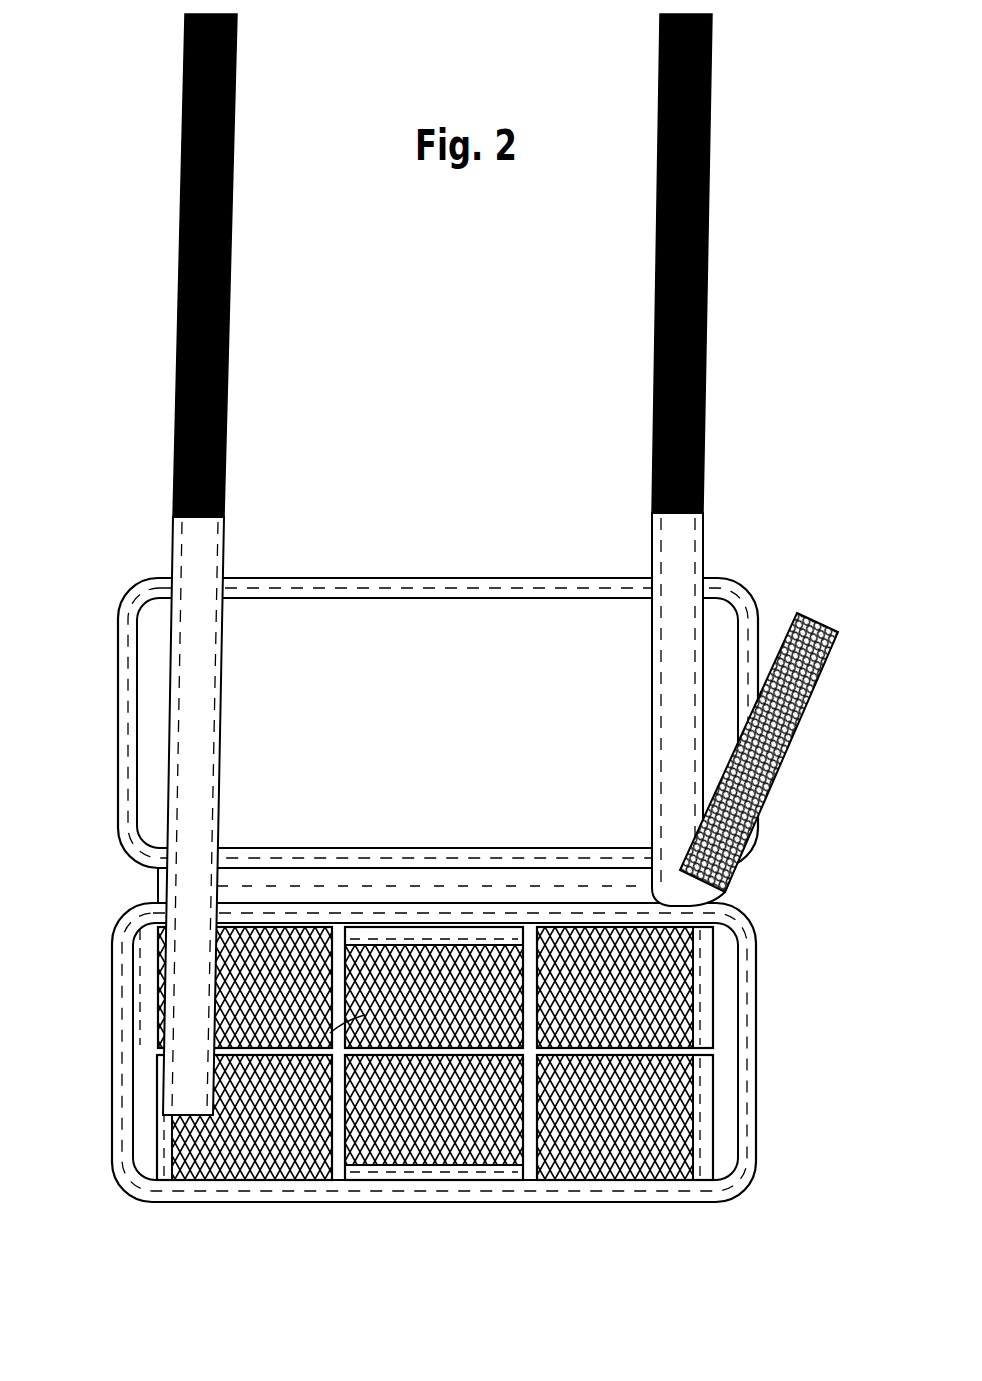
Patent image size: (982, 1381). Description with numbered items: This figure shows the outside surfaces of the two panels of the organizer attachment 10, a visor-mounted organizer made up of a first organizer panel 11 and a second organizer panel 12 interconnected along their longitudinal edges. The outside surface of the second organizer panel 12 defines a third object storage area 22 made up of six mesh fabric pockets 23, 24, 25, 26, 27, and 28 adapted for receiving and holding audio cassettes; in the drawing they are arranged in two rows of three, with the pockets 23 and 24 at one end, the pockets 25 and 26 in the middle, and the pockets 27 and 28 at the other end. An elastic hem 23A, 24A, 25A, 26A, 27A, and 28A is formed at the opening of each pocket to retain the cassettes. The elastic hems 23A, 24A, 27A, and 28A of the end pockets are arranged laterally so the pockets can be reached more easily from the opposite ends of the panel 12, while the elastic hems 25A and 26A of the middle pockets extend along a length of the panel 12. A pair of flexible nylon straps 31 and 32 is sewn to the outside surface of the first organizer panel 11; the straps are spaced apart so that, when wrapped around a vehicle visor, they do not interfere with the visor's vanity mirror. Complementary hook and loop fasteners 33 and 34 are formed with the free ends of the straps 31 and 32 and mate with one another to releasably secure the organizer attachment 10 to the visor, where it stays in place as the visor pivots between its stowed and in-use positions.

The organizer attachment 10 is at (86, 554).
The first organizer panel 11 is at (745, 590).
The second organizer panel 12 is at (723, 1150).
The third object storage area 22 is at (135, 1108).
The mesh fabric pocket 23 is at (248, 963).
The elastic hem 23A is at (152, 1007).
The mesh fabric pocket 24 is at (207, 1180).
The elastic hem 24A is at (160, 1160).
The mesh fabric pocket 25 is at (308, 1180).
The elastic hem 25A is at (372, 940).
The mesh fabric pocket 26 is at (377, 1180).
The elastic hem 26A is at (505, 1170).
The mesh fabric pocket 27 is at (697, 950).
The elastic hem 27A is at (705, 997).
The mesh fabric pocket 28 is at (682, 1178).
The elastic hem 28A is at (700, 1115).
The flexible nylon strap 31 is at (177, 335).
The flexible nylon strap 32 is at (705, 375).
The hook and loop fastener 33 is at (178, 205).
The hook and loop fastener 34 is at (800, 728).